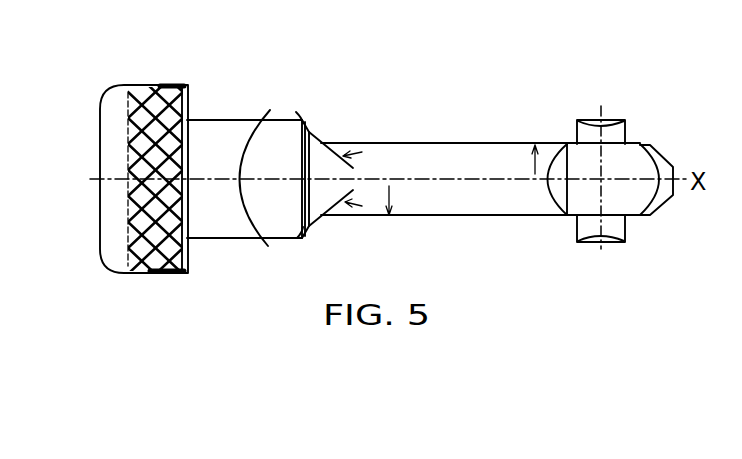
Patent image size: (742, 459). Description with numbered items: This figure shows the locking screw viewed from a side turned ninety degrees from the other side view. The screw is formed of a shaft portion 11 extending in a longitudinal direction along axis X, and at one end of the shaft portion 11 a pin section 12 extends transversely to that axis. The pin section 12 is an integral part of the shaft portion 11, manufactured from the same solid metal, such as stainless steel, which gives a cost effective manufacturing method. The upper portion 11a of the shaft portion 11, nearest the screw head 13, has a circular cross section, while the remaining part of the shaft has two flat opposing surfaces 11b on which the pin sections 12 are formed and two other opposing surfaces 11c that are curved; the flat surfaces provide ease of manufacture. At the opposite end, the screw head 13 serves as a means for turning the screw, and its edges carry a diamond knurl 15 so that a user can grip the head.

The shaft portion 11 is at (430, 164).
The upper portion 11a is at (228, 130).
The flat opposing surfaces 11b is at (500, 143).
The curved opposing surfaces 11c is at (467, 190).
The pin section 12 is at (626, 120).
The screw head 13 is at (172, 84).
The diamond knurl 15 is at (168, 273).